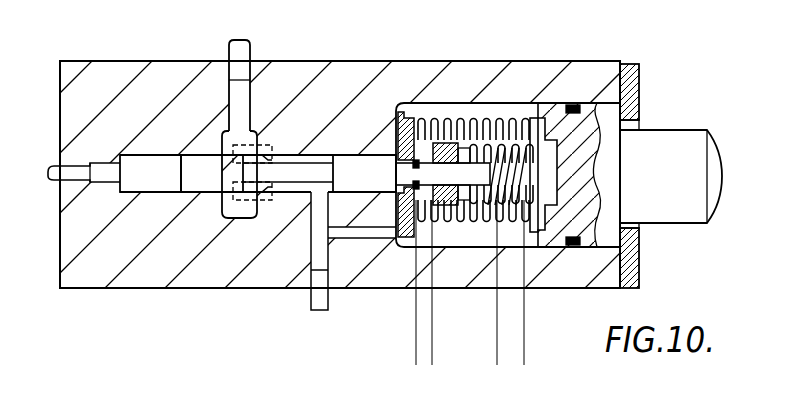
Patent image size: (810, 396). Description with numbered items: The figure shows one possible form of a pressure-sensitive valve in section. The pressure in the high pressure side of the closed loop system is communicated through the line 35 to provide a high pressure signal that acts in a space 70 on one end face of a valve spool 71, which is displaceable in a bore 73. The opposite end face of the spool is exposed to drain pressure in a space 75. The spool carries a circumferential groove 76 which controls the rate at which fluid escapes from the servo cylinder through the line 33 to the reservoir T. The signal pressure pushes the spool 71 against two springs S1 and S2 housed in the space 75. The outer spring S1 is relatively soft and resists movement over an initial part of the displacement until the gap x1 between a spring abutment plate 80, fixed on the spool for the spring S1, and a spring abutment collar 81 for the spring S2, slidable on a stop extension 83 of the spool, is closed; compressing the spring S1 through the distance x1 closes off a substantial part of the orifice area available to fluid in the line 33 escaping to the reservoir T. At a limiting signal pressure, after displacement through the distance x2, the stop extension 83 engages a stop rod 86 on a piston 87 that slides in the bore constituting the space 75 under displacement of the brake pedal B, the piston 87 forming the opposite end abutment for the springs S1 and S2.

The line 33 is at (246, 50).
The line 35 is at (70, 168).
The space 70 is at (133, 186).
The valve spool 71 is at (195, 184).
The bore 73 is at (283, 196).
The circumferential groove 76 is at (325, 160).
The spring abutment plate 80 is at (407, 118).
The spring abutment collar 81 is at (450, 153).
The stop extension 83 is at (460, 178).
The outer spring S1 is at (457, 152).
The inner spring S2 is at (503, 152).
The space 75 is at (525, 112).
The stop rod 86 is at (541, 170).
The piston 87 is at (600, 163).
The reservoir T is at (319, 295).
The brake pedal B is at (645, 95).
The gap x1 is at (452, 360).
The distance x2 is at (478, 360).